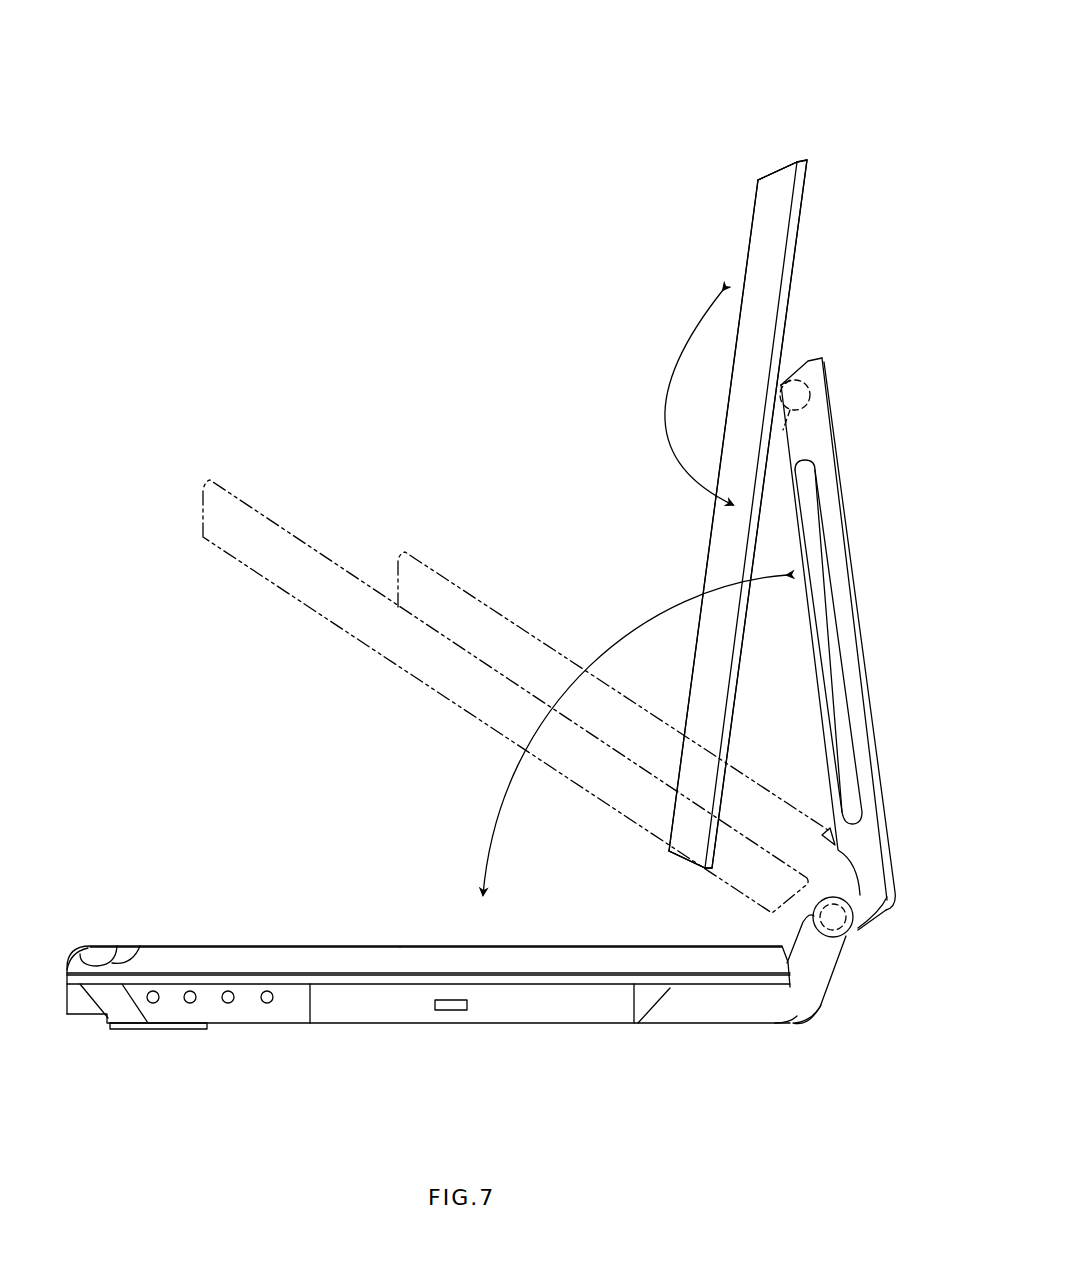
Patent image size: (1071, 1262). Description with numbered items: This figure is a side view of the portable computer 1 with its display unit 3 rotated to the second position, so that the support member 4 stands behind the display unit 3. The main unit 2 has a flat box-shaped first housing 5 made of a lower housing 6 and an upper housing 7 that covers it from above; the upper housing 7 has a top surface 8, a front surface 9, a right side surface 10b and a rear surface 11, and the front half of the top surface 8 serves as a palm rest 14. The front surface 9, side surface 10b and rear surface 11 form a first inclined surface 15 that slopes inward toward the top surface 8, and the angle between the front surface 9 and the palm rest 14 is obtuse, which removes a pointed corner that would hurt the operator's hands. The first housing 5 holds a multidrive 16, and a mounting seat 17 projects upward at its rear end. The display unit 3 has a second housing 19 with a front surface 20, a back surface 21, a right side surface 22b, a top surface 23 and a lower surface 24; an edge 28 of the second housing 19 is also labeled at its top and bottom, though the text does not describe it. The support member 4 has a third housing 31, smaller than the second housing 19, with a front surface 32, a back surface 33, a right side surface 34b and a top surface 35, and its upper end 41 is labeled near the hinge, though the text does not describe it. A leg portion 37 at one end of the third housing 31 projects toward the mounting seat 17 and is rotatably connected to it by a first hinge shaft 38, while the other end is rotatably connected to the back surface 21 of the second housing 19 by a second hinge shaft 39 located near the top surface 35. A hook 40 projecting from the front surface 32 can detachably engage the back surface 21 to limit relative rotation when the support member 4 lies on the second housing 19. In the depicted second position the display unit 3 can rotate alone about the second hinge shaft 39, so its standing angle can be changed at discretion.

The portable computer 1 is at (783, 88).
The main unit 2 is at (355, 1035).
The display unit 3 is at (805, 245).
The support member 4 is at (860, 566).
The first housing 5 is at (250, 1098).
The lower housing 6 is at (177, 1010).
The upper housing 7 is at (237, 964).
The top surface 8 is at (392, 945).
The front surface 9 is at (69, 966).
The right side surface 10b is at (535, 965).
The rear surface 11 is at (787, 967).
The palm rest 14 is at (231, 944).
The first inclined surface 15 is at (84, 960).
The multidrive 16 is at (414, 1012).
The mounting seat 17 is at (807, 1007).
The second housing 19 is at (762, 222).
The front surface 20 is at (712, 527).
The back surface 21 is at (792, 298).
The right side surface 22b is at (722, 563).
The top surface 23 is at (768, 175).
The lower surface 24 is at (675, 858).
The edge of display housing 28 is at (789, 163).
The third housing 31 is at (833, 670).
The front surface 32 is at (803, 613).
The back surface 33 is at (858, 612).
The right side surface 34b is at (857, 713).
The top surface 35 is at (781, 386).
The leg portion 37 is at (850, 893).
The first hinge shaft 38 is at (847, 935).
The second hinge shaft 39 is at (810, 395).
The hook 40 is at (822, 835).
The upper end of stand 41 is at (800, 368).